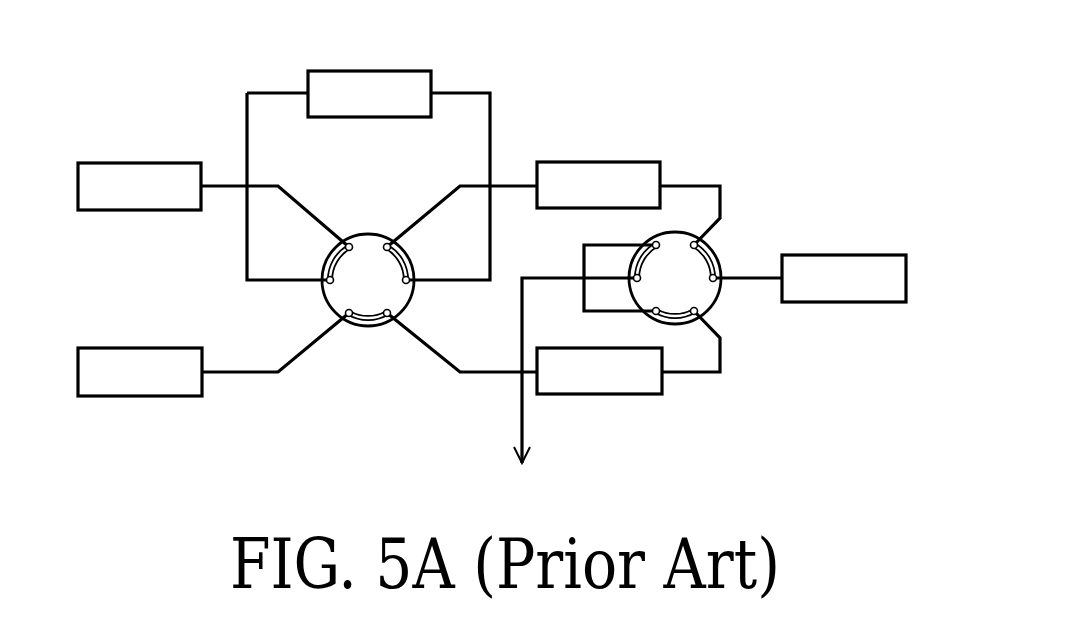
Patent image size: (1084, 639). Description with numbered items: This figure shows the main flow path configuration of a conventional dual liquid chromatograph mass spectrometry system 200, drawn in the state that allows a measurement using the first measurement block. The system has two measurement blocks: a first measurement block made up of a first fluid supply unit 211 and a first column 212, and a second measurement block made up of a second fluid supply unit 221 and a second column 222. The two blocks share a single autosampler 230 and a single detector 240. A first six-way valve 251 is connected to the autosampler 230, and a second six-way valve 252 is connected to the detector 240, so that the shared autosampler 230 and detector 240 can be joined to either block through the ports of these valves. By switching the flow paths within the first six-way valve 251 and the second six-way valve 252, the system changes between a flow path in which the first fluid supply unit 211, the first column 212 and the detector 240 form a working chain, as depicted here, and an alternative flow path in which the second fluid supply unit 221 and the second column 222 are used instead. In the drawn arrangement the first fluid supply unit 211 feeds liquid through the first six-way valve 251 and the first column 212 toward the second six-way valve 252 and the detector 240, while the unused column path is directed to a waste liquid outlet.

The liquid chromatography system (prior art) 200 is at (678, 49).
The first fluid supply unit 211 is at (155, 212).
The second fluid supply unit 221 is at (155, 397).
The autosampler 230 is at (385, 118).
The first column 212 is at (613, 161).
The second column 222 is at (615, 395).
The detector 240 is at (860, 302).
The first six-way valve 251 is at (380, 328).
The second six-way valve 252 is at (714, 306).